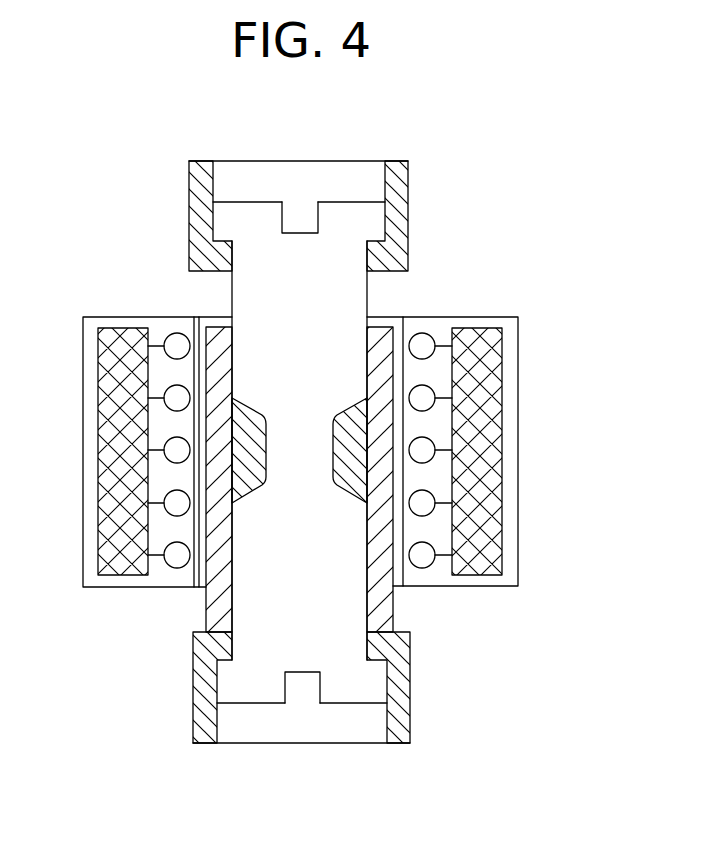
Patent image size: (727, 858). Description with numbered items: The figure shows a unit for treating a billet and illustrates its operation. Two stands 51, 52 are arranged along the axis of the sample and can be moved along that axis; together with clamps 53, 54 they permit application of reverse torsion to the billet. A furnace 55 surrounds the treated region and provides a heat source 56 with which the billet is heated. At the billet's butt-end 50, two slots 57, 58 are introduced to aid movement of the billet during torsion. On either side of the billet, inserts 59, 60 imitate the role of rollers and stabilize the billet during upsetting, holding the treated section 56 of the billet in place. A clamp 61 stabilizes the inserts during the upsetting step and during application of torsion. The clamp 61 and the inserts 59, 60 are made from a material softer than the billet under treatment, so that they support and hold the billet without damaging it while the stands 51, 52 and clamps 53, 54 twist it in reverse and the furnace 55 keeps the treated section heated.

The butt-end 50 is at (256, 222).
The stand 51 is at (221, 193).
The stand 52 is at (355, 727).
The clamp 53 is at (401, 182).
The clamp 54 is at (193, 742).
The furnace 55 is at (490, 467).
The heat source 56 is at (283, 460).
The slot 57 is at (307, 218).
The slot 58 is at (293, 698).
The insert 59 is at (358, 468).
The insert 60 is at (245, 442).
The clamp 61 is at (222, 342).